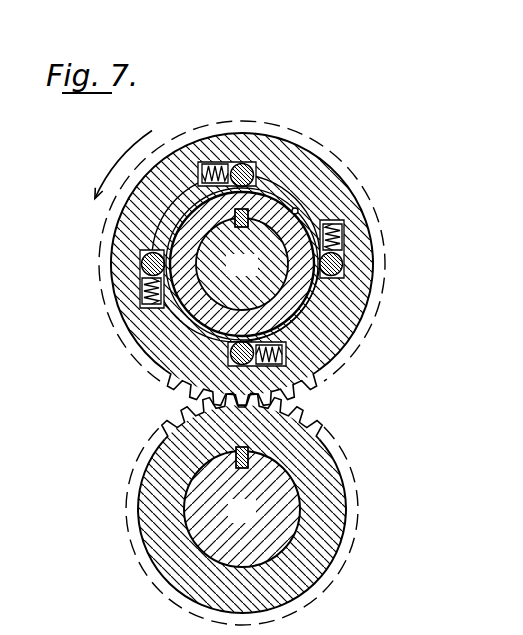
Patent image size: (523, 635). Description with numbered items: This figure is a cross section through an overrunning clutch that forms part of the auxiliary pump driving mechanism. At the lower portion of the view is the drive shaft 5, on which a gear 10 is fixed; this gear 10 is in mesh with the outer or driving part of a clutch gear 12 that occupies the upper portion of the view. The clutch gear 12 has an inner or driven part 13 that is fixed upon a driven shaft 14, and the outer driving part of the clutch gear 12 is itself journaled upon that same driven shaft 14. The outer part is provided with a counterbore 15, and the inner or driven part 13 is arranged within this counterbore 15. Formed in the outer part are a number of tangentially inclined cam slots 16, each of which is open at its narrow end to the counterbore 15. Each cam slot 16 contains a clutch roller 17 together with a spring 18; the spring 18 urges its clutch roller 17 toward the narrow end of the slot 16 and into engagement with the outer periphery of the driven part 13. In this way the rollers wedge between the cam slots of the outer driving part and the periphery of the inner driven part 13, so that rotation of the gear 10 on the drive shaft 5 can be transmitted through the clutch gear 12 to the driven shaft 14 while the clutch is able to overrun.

The drive shaft 5 is at (242, 507).
The gear 10 is at (350, 497).
The clutch gear 12 is at (364, 251).
The inner or driven part 13 is at (203, 325).
The driven shaft 14 is at (242, 264).
The counterbore 15 is at (298, 210).
The tangentially inclined cam slot 16 is at (258, 163).
The clutch roller 17 is at (244, 163).
The spring 18 is at (210, 162).